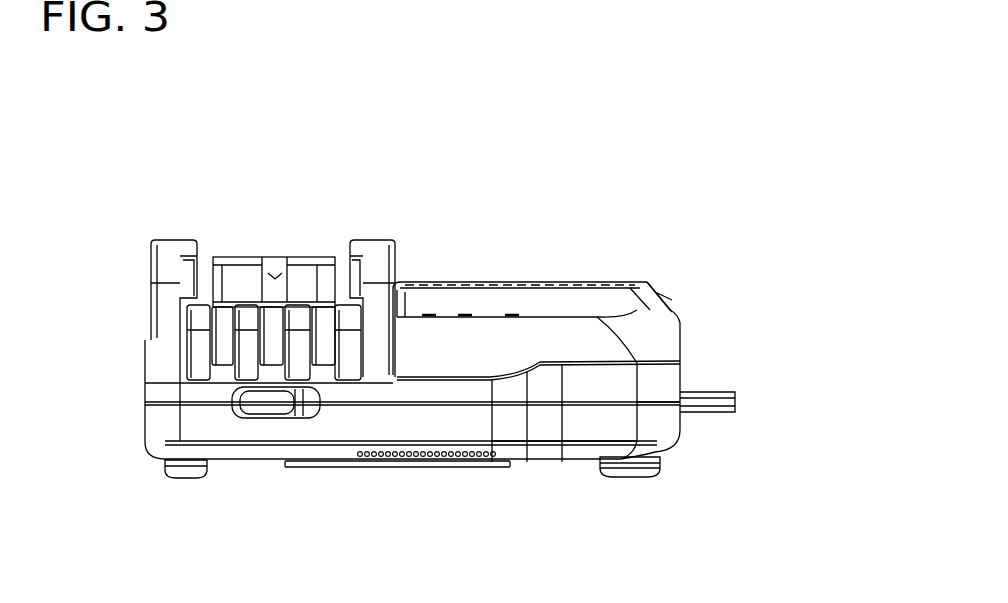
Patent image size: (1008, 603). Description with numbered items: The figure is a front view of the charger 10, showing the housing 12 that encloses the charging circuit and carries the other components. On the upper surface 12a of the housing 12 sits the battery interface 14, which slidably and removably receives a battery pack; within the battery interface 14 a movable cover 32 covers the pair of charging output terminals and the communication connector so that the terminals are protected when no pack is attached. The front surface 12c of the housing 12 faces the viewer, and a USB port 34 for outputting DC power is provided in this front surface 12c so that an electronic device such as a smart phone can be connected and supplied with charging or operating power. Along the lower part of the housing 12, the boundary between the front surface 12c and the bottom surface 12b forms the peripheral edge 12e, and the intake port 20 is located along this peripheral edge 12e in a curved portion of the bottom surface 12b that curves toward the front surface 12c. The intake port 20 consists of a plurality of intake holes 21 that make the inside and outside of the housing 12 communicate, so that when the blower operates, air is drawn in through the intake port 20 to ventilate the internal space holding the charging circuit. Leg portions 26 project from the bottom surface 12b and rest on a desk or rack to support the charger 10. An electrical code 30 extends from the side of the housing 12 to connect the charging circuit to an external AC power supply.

The charger 10 is at (704, 168).
The housing 12 is at (663, 302).
The upper surface 12a is at (473, 292).
The bottom surface 12b is at (588, 462).
The front surface 12c is at (580, 430).
The peripheral edge 12e is at (514, 458).
The battery interface 14 is at (208, 218).
The intake port 20 is at (497, 478).
The intake holes 21 is at (352, 463).
The leg portions 26 is at (172, 478).
The electrical code 30 is at (717, 390).
The movable cover 32 is at (273, 258).
The USB port 34 is at (273, 417).